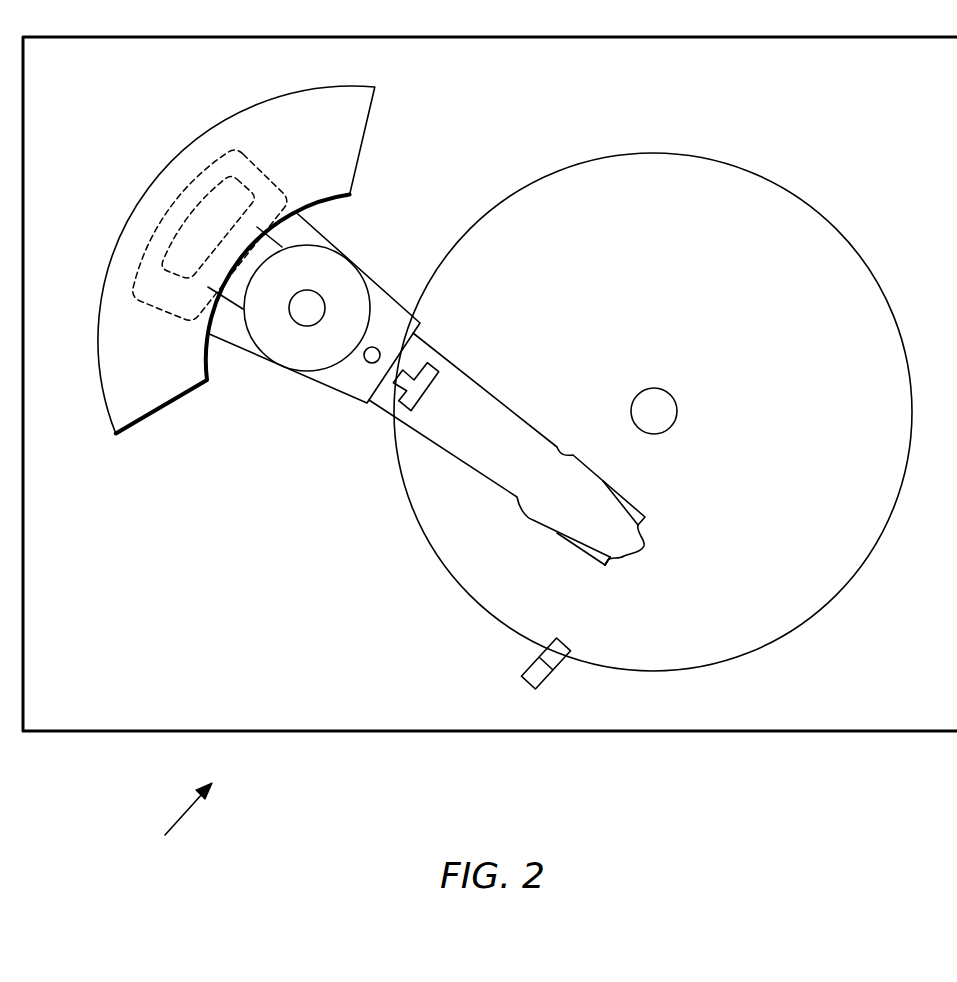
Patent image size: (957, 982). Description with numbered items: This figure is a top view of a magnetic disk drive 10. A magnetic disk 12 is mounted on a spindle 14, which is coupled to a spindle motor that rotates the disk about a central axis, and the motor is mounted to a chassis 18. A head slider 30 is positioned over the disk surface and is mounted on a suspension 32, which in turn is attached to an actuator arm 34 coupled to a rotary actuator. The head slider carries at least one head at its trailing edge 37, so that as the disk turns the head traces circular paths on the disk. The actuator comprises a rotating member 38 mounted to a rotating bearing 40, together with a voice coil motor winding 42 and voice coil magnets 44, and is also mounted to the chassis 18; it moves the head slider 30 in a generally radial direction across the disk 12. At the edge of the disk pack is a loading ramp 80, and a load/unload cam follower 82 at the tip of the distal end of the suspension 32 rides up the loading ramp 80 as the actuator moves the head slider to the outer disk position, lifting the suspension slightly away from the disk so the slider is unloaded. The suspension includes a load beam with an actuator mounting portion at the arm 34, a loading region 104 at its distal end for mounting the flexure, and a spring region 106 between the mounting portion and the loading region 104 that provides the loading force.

The magnetic disk drive 10 is at (176, 830).
The magnetic disks 12 is at (674, 236).
The spindle 14 is at (671, 393).
The chassis 18 is at (885, 116).
The head sliders 30 is at (598, 557).
The suspensions 32 is at (493, 406).
The actuator arms 34 is at (368, 358).
The trailing edge 37 is at (606, 563).
The rotating member 38 is at (290, 352).
The rotating bearing 40 is at (312, 299).
The voice coil motor winding 42 is at (137, 298).
The voice coil magnets 44 is at (357, 139).
The loading ramp 80 is at (528, 671).
The load/unload cam follower 82 is at (648, 545).
The loading region 104 is at (603, 486).
The spring region 106 is at (390, 417).